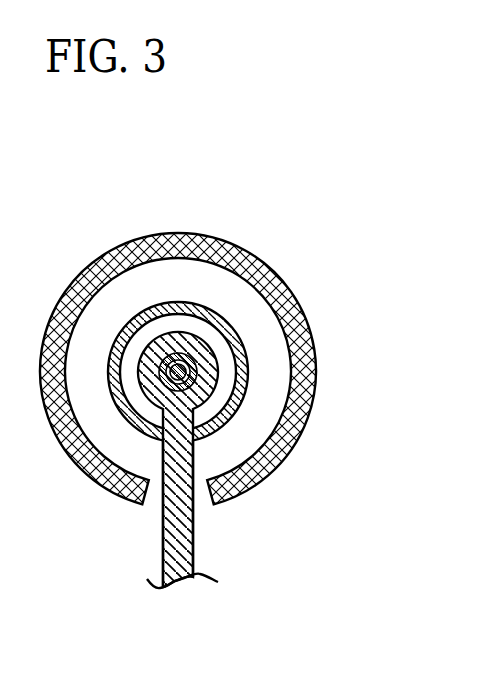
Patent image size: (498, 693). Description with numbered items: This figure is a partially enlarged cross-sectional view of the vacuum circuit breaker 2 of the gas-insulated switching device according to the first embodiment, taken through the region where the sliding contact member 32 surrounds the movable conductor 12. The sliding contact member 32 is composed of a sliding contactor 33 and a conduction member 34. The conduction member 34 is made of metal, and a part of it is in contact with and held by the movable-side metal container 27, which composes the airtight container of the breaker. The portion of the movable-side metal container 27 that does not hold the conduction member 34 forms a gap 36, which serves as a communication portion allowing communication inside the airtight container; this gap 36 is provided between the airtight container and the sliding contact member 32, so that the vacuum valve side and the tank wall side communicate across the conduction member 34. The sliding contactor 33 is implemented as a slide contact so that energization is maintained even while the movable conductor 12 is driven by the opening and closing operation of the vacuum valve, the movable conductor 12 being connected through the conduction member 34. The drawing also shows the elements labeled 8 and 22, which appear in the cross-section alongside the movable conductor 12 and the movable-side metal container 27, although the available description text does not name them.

The vacuum circuit breaker 2 is at (208, 373).
The lead portion 8 is at (163, 542).
The movable conductor 12 is at (219, 372).
The outer cylindrical member 22 is at (90, 480).
The movable-side metal container 27 is at (189, 353).
The sliding contact member 32 is at (76, 188).
The sliding contactor 33 is at (162, 302).
The conduction member 34 is at (183, 356).
The gap 36 is at (248, 372).